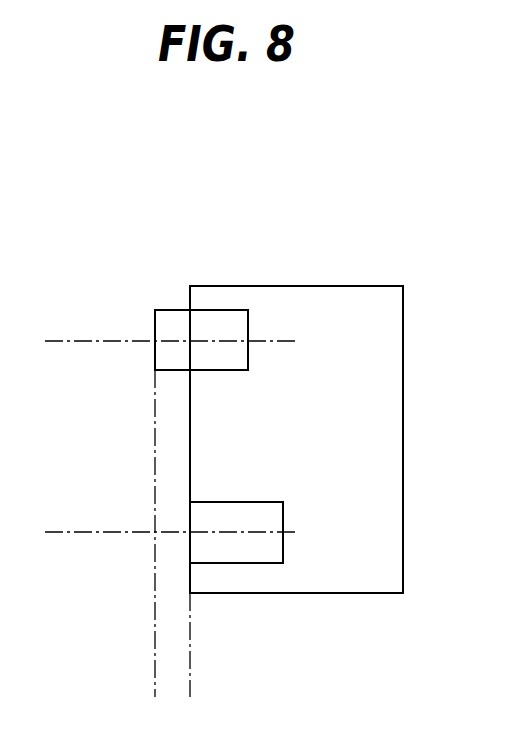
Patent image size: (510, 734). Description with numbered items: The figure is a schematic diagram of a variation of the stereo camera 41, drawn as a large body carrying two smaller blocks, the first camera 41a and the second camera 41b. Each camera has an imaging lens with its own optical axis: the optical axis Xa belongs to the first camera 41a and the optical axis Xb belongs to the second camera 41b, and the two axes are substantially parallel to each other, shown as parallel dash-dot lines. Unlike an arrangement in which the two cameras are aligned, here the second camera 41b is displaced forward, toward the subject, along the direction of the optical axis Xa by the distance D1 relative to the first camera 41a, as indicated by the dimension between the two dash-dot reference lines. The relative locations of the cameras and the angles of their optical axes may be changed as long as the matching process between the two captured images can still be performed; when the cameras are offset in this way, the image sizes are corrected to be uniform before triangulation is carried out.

The stereo camera 41 is at (343, 268).
The first camera 41a is at (190, 507).
The second camera 41b is at (155, 315).
The optical axis Xa is at (53, 530).
The optical axis Xb is at (53, 338).
The offset distance D1 is at (190, 687).